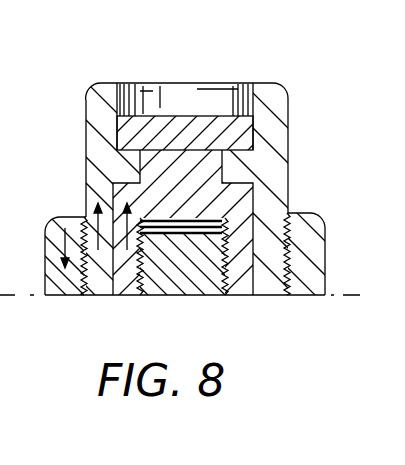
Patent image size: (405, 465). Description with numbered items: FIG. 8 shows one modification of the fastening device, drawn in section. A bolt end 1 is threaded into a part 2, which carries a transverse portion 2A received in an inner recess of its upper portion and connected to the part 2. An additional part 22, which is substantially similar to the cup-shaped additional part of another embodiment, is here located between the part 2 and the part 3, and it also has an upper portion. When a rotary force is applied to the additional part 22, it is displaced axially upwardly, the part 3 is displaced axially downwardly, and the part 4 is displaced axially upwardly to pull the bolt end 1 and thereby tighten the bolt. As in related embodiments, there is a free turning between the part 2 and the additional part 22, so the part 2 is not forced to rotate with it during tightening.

The bolt end 1 is at (197, 287).
The part 2 is at (193, 182).
The transverse portion 2A is at (192, 127).
The part 3 is at (313, 250).
The part 4 is at (266, 152).
The additional part 22 is at (280, 180).